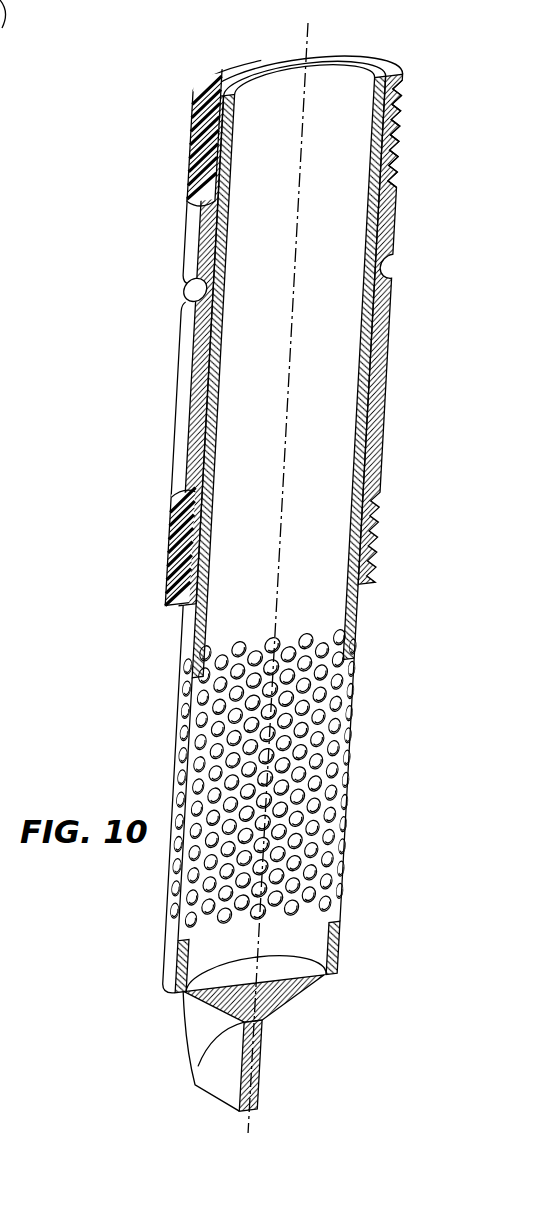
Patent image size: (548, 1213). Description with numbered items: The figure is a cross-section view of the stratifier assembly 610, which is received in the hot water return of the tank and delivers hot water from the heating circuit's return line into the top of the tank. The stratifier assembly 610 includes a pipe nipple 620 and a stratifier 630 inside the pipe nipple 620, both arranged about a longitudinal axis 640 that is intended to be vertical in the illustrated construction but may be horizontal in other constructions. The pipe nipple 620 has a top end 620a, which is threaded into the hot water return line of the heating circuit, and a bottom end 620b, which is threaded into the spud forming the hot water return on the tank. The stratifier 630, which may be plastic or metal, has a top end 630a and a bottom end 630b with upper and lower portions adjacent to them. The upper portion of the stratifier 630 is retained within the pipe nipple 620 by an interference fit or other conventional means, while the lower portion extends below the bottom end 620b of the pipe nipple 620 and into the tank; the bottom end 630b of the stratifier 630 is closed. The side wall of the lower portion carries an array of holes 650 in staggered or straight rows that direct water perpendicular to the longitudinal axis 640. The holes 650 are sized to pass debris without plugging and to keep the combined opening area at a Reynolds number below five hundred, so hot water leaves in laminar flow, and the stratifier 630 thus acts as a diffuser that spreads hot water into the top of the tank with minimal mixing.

The stratifier assembly 610 is at (28, 60).
The pipe nipple 620 is at (186, 337).
The top end of pipe nipple 620a is at (197, 120).
The bottom end of pipe nipple 620b is at (168, 553).
The stratifier 630 is at (357, 623).
The top end of stratifier 630a is at (349, 107).
The bottom end of stratifier 630b is at (301, 938).
The longitudinal axis 640 is at (289, 392).
The holes 650 is at (347, 779).